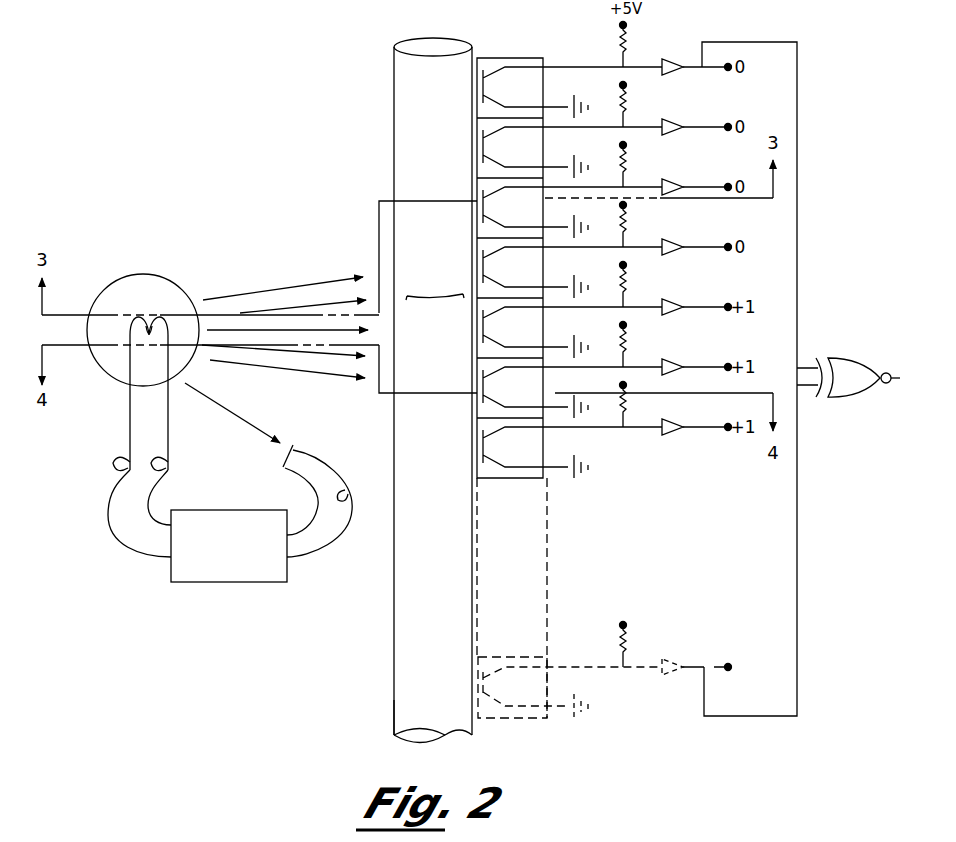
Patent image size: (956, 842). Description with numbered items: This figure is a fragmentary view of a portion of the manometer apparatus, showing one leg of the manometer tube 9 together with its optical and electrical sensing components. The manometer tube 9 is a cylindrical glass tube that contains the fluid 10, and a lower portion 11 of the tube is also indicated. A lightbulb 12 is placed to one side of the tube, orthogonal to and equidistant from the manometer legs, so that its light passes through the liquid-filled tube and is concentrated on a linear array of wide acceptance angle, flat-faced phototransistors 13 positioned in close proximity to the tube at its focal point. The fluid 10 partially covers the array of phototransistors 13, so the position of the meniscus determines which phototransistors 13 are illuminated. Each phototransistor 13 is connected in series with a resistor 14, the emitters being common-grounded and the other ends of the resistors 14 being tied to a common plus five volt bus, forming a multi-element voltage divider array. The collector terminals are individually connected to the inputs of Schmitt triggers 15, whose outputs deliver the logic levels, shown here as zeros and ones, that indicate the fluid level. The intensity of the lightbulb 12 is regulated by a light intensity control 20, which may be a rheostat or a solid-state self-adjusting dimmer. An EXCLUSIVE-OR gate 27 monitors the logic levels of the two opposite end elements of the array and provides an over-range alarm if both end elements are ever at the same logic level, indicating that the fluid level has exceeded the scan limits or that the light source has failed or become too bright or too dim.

The manometer tube 9 is at (422, 132).
The fluid 10 is at (430, 642).
The lower tube portion 11 is at (394, 706).
The lightbulb 12 is at (178, 285).
The phototransistors 13 is at (523, 135).
The resistor 14 is at (620, 45).
The Schmitt triggers 15 is at (669, 60).
The light dimmer 20 is at (228, 584).
The EXCLUSIVE-OR gate 27 is at (851, 399).